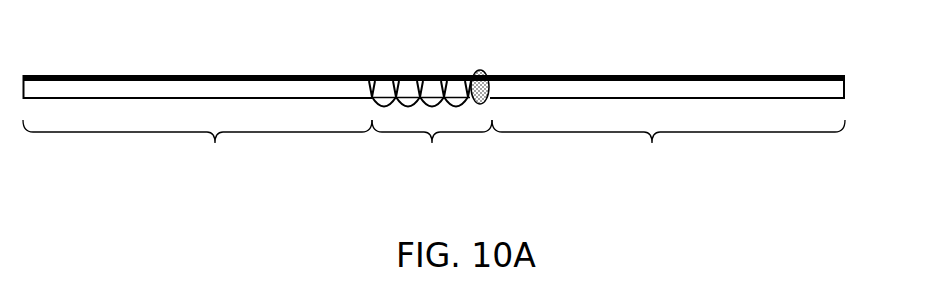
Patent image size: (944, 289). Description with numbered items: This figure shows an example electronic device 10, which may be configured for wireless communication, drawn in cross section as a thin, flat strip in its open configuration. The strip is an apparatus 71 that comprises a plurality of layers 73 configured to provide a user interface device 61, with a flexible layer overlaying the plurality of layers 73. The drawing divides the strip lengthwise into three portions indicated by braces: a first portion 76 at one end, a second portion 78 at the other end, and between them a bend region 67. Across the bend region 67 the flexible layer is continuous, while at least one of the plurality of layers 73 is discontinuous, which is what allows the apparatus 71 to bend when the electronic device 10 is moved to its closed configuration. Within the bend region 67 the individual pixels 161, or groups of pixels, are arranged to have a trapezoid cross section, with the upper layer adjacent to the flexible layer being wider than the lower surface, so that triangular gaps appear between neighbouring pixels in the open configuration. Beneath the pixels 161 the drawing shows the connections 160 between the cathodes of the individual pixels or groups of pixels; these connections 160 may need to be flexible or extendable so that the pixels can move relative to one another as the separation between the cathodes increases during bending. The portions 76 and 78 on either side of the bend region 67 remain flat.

The electronic device 10 is at (845, 88).
The user interface device 61 is at (98, 71).
The apparatus 71 is at (805, 74).
The plurality of layers 73 is at (350, 94).
The first portion 76 is at (197, 148).
The bend region 67 is at (432, 148).
The second portion 78 is at (668, 148).
The connections 160 is at (446, 114).
The individual pixels 161 is at (438, 85).